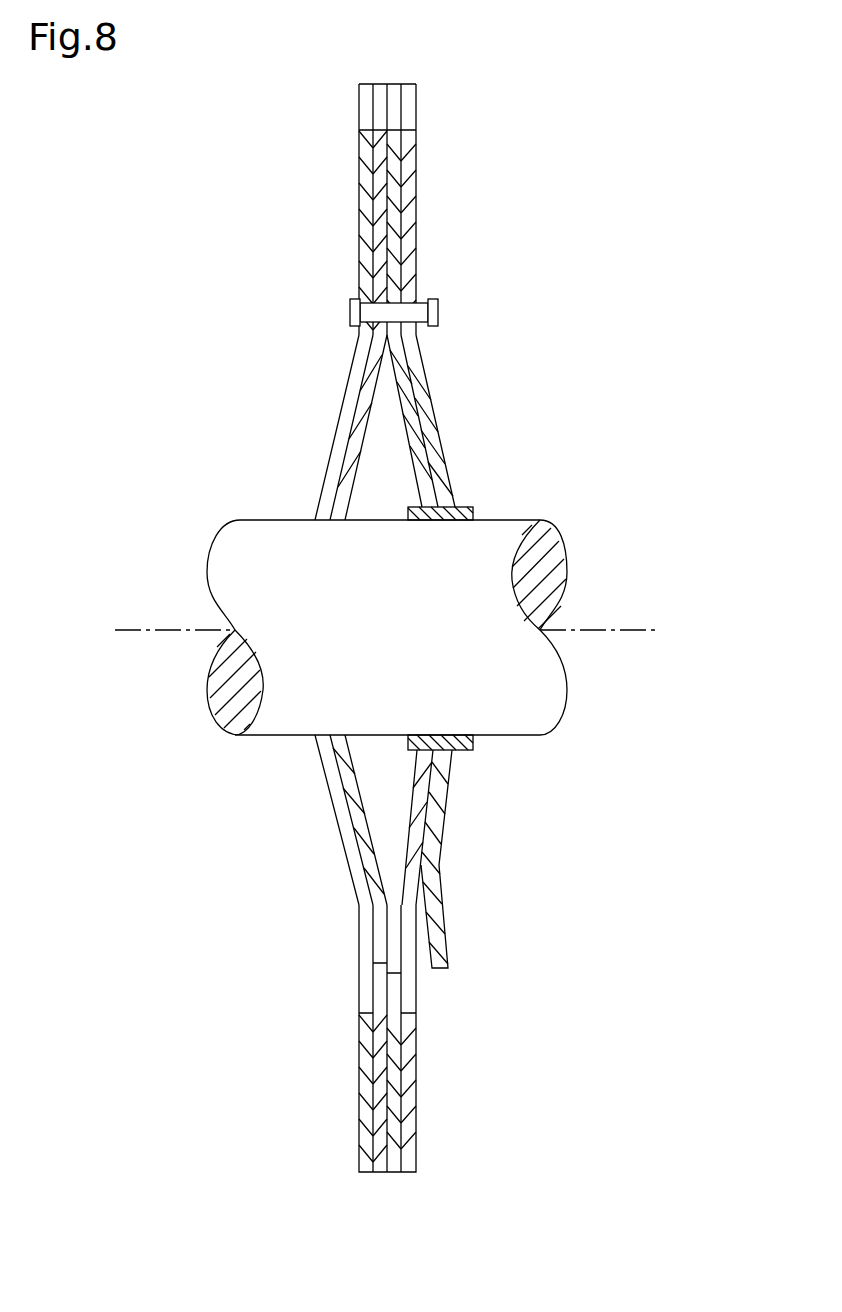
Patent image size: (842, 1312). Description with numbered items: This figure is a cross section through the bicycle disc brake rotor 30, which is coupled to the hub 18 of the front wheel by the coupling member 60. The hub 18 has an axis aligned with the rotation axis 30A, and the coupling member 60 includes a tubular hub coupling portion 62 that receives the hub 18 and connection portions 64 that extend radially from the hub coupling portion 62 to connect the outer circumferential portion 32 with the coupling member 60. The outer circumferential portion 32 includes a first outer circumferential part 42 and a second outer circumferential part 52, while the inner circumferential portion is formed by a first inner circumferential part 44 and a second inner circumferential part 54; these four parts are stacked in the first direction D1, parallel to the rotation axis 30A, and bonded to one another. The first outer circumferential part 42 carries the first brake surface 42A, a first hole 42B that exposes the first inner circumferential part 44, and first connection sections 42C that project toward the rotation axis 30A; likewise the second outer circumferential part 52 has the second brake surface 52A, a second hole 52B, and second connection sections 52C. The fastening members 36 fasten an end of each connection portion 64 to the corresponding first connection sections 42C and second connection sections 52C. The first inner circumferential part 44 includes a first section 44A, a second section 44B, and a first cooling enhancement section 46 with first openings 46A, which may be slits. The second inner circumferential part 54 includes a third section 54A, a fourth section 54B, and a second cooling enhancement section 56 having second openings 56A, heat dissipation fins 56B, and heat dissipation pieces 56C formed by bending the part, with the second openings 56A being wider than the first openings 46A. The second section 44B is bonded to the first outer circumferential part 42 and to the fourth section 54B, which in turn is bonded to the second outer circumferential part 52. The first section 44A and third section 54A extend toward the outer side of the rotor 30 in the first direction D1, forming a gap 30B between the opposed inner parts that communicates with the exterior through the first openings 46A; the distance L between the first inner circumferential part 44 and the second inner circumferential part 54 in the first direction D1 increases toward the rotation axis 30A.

The hub 18 is at (510, 740).
The bicycle disc brake rotor 30 is at (92, 1145).
The rotation axis 30A is at (638, 628).
The gap 30B is at (386, 843).
The outer circumferential portion 32 is at (197, 1128).
The fastening members 36 is at (349, 316).
The first outer circumferential part 42 is at (359, 628).
The first brake surface 42A is at (366, 1110).
The first hole 42B is at (369, 1019).
The first connection sections 42C is at (352, 302).
The first inner circumferential part 44 is at (285, 680).
The first section 44A is at (362, 414).
The second section 44B is at (302, 999).
The first cooling enhancement section 46 is at (317, 931).
The first openings 46A is at (378, 966).
The second outer circumferential part 52 is at (504, 1027).
The second brake surface 52A is at (412, 1110).
The second hole 52B is at (406, 1019).
The second connection sections 52C is at (432, 302).
The second inner circumferential part 54 is at (545, 680).
The third section 54A is at (410, 402).
The fourth section 54B is at (396, 1026).
The second cooling enhancement section 56 is at (497, 870).
The second openings 56A is at (400, 972).
The heat dissipation fins 56B is at (470, 953).
The heat dissipation pieces 56C is at (437, 918).
The coupling member 60 is at (504, 592).
The hub coupling portion 62 is at (472, 512).
The connection portions 64 is at (448, 440).
The distance L is at (416, 789).
The first direction D1 is at (620, 1085).